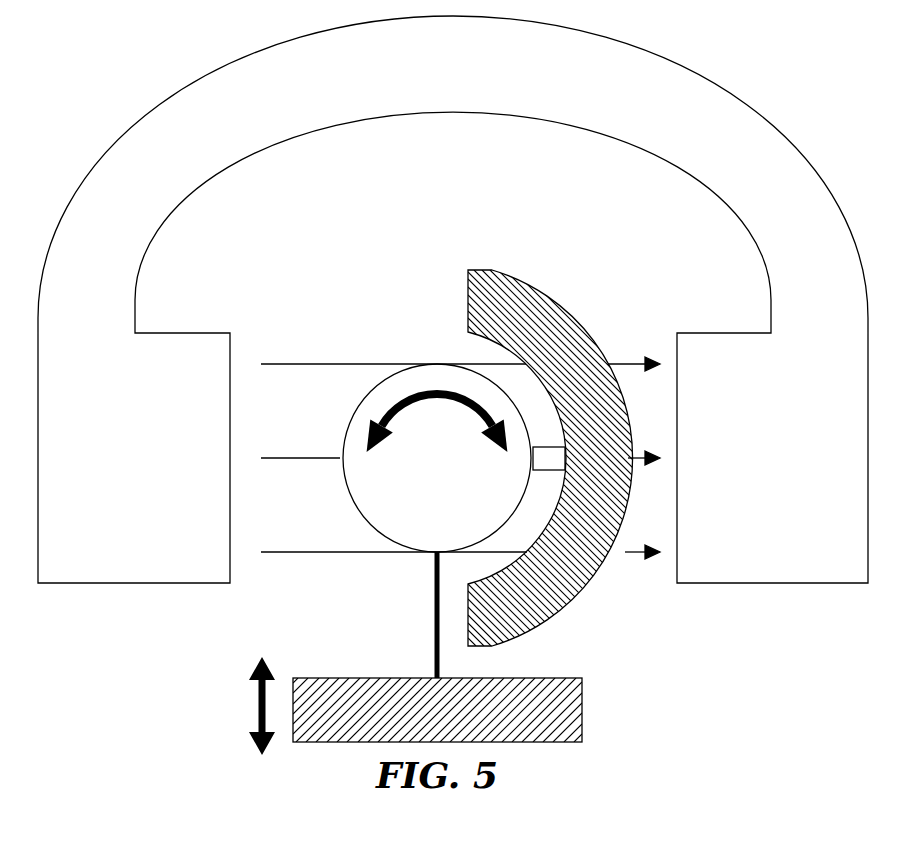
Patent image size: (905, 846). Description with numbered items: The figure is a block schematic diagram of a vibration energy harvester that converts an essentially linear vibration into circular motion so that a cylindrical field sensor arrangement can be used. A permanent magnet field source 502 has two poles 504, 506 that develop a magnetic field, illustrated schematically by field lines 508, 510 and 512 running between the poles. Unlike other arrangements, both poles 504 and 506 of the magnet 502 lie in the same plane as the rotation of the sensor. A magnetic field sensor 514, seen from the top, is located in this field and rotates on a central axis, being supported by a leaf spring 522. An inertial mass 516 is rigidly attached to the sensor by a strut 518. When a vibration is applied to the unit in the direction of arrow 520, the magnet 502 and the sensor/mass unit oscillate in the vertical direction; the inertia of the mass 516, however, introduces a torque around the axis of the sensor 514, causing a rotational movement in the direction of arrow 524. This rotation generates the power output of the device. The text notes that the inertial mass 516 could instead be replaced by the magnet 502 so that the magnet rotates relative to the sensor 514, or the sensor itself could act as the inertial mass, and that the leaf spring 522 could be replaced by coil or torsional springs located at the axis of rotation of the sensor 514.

The permanent magnet field source 502 is at (710, 143).
The pole 504 is at (165, 362).
The pole 506 is at (740, 348).
The field line 508 is at (325, 364).
The field line 510 is at (293, 458).
The field line 512 is at (293, 552).
The magnetic field sensor 514 is at (428, 380).
The inertial mass 516 is at (488, 300).
The strut 518 is at (549, 457).
The arrow 520 is at (253, 703).
The leaf spring 522 is at (440, 667).
The arrow 524 is at (464, 405).